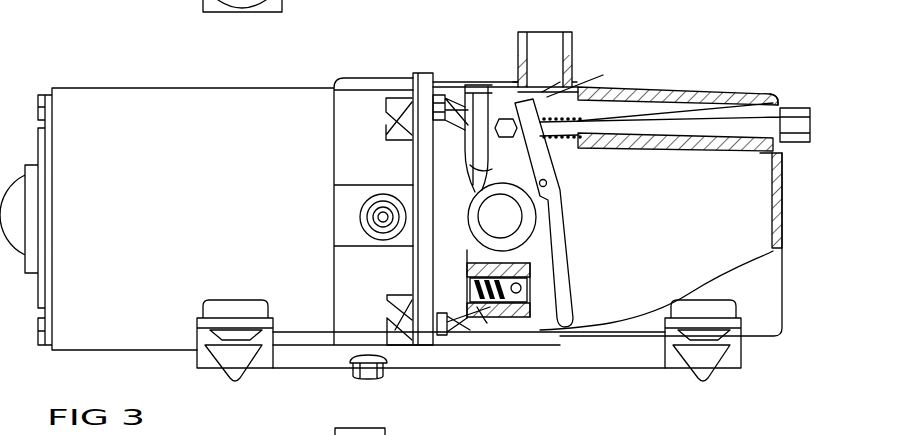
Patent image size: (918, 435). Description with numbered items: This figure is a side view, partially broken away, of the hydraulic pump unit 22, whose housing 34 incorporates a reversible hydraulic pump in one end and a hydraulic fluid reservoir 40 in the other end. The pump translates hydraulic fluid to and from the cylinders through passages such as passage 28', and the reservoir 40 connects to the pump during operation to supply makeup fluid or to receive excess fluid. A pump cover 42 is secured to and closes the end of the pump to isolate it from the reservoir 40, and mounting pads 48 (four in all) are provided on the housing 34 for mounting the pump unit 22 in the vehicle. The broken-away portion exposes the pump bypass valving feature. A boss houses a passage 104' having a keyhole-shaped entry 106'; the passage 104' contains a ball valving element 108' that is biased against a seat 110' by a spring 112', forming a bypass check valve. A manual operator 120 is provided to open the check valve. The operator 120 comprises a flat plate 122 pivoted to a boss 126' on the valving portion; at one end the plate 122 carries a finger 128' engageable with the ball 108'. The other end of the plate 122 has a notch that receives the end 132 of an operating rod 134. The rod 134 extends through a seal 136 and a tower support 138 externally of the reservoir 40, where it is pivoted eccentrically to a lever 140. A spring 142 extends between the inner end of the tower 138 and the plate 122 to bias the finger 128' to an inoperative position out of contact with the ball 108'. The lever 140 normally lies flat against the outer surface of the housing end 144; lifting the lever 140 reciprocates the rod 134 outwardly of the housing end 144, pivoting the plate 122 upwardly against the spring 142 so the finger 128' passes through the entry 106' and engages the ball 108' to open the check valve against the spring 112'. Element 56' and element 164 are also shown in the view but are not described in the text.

The pump unit 22 is at (371, 74).
The passage 28' is at (332, 217).
The housing 34 is at (198, 88).
The hydraulic fluid reservoir 40 is at (719, 247).
The pump cover 42 is at (475, 97).
The mounting pads 48 is at (203, 323).
The hub 56' is at (444, 237).
The passage 104' is at (500, 330).
The keyhole-shaped entry 106' is at (566, 333).
The ball valving element 108' is at (566, 257).
The seat 110' is at (566, 289).
The spring 112' is at (559, 217).
The manual operator 120 is at (566, 157).
The flat plate 122 is at (550, 202).
The boss 126' is at (424, 164).
The finger 128' is at (552, 295).
The end of operating rod 132 is at (506, 120).
The operating rod 134 is at (645, 125).
The seal 136 is at (587, 117).
The tower support 138 is at (705, 110).
The lever 140 is at (760, 96).
The spring 142 is at (560, 64).
The housing end 144 is at (777, 202).
The rod 164 is at (800, 112).